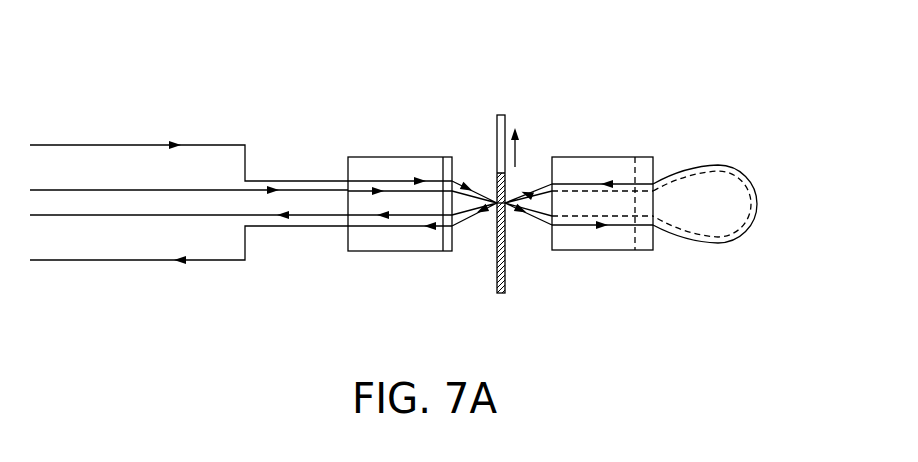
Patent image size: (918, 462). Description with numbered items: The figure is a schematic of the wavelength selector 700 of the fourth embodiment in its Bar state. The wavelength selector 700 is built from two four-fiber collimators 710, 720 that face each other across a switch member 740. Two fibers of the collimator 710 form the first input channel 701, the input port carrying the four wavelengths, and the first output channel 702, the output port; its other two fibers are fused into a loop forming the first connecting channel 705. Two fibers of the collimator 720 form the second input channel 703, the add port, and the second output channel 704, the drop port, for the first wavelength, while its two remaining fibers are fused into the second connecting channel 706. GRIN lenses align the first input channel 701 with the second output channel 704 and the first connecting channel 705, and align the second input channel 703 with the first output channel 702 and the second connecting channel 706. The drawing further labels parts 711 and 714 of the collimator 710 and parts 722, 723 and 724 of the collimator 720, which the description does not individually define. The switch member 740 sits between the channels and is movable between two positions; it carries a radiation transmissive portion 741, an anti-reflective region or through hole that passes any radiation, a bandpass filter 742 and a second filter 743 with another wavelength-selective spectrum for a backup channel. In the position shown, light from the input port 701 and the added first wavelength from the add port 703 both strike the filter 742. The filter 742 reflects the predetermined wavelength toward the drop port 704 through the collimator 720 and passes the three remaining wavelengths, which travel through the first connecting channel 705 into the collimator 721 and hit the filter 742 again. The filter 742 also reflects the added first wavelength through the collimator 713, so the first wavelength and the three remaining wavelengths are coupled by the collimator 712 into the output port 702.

The wavelength selector 700 is at (102, 27).
The first input channel 701 is at (42, 190).
The first output channel 702 is at (42, 215).
The second input channel 703 is at (103, 145).
The second output channel 704 is at (102, 260).
The first connecting channel 705 is at (757, 203).
The second connecting channel 706 is at (716, 171).
The four-fiber collimator 710 is at (367, 151).
The first collimator upper port 711 is at (395, 190).
The collimator 712 is at (437, 222).
The collimator 713 is at (443, 157).
The first collimator lower path 714 is at (383, 227).
The four-fiber collimator 720 is at (558, 151).
The collimator 721 is at (572, 225).
The second collimator upper port 722 is at (587, 187).
The second collimator fiber 723 is at (635, 250).
The second collimator lens 724 is at (635, 157).
The switch member 740 is at (502, 109).
The radiation transmissive portion 741 is at (497, 143).
The bandpass filter 742 is at (505, 223).
The second filter 743 is at (497, 245).